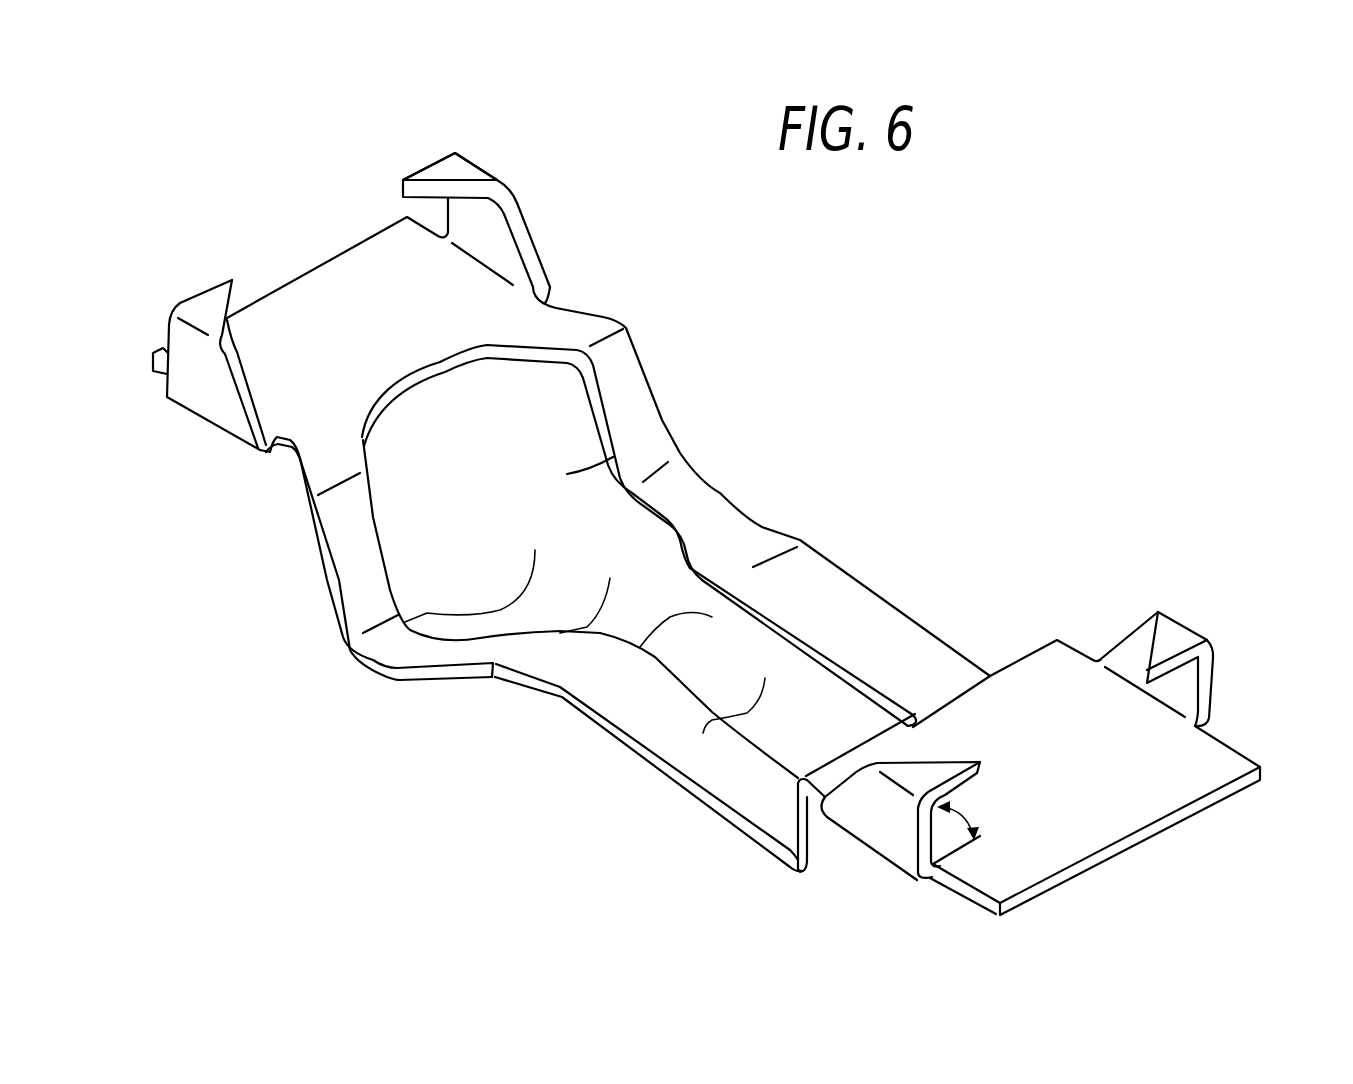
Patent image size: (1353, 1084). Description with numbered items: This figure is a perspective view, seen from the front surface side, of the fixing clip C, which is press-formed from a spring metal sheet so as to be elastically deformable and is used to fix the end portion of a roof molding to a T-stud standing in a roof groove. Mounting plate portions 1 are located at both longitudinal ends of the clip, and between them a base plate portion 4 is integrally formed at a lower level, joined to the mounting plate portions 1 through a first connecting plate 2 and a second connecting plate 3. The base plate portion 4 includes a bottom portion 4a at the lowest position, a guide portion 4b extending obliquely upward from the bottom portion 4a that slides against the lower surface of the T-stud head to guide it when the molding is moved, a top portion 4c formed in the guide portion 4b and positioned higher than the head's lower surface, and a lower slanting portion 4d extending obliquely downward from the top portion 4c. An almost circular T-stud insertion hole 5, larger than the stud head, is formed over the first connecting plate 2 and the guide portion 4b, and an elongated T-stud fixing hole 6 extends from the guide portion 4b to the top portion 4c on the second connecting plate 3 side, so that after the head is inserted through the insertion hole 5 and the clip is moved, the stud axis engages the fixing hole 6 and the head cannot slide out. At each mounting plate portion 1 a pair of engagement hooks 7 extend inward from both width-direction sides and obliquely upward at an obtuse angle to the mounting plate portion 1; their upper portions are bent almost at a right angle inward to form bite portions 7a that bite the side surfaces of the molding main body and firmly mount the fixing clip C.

The mounting plate portion 1 is at (333, 280).
The first connecting plate 2 is at (365, 535).
The second connecting plate 3 is at (820, 843).
The base plate portion 4 is at (548, 718).
The bottom portion 4a is at (637, 543).
The guide portion 4b is at (717, 550).
The top portion 4c is at (772, 560).
The lower slanting portion 4d is at (872, 640).
The T-stud insertion hole 5 is at (623, 421).
The T-stud fixing hole 6 is at (830, 707).
The engagement hook 7 is at (192, 345).
The bite portion 7a is at (403, 180).
The fixing clip C is at (888, 492).